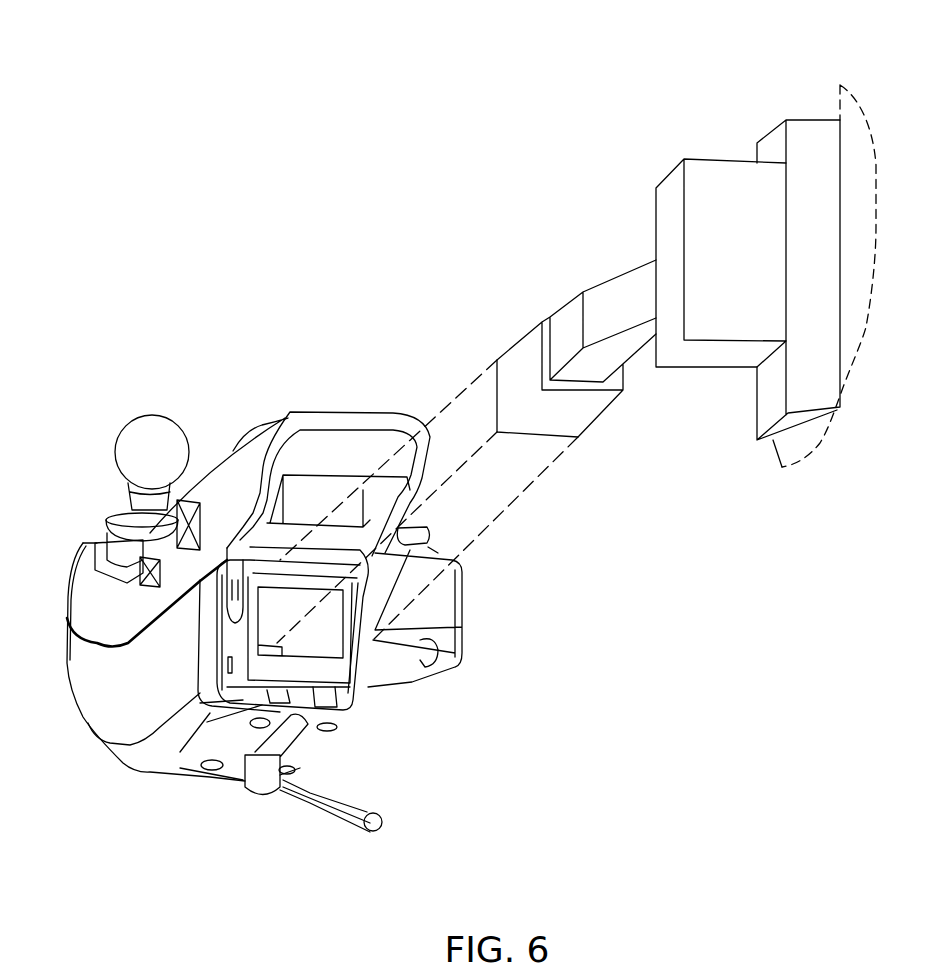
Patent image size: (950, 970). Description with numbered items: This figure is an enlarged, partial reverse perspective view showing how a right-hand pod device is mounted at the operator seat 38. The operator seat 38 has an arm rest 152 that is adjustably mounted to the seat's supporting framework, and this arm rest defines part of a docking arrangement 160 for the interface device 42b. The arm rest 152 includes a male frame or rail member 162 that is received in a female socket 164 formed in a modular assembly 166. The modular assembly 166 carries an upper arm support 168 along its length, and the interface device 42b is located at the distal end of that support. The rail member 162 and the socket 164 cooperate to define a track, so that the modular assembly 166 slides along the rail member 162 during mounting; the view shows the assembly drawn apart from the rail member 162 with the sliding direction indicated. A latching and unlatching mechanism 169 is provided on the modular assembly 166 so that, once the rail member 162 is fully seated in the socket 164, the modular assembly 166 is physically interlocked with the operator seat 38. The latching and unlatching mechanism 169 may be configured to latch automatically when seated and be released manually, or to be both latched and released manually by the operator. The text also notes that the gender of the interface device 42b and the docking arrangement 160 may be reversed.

The operator seat 38 is at (843, 106).
The arm rest 152 is at (650, 153).
The rail member 162 is at (623, 343).
The docking arrangement 160 is at (411, 370).
The upper arm support 168 is at (305, 423).
The socket 164 is at (315, 643).
The modular assembly 166 is at (91, 780).
The interface device 42b is at (110, 470).
The latching and unlatching mechanism 169 is at (263, 797).